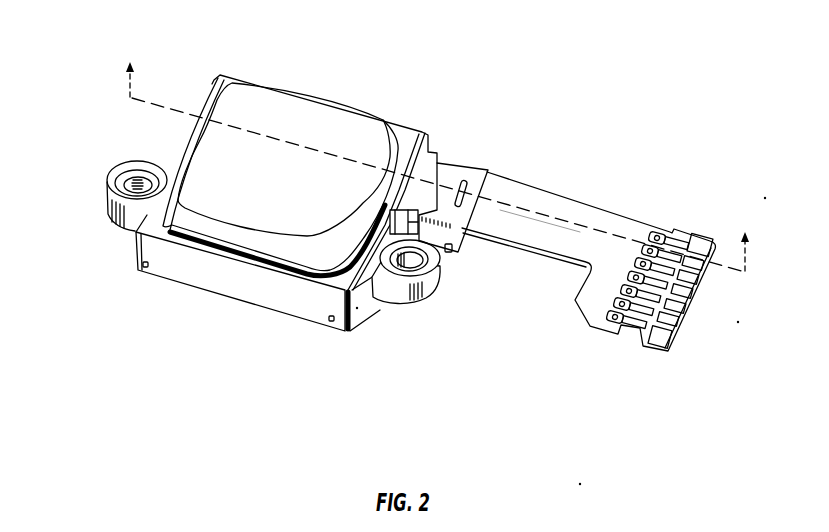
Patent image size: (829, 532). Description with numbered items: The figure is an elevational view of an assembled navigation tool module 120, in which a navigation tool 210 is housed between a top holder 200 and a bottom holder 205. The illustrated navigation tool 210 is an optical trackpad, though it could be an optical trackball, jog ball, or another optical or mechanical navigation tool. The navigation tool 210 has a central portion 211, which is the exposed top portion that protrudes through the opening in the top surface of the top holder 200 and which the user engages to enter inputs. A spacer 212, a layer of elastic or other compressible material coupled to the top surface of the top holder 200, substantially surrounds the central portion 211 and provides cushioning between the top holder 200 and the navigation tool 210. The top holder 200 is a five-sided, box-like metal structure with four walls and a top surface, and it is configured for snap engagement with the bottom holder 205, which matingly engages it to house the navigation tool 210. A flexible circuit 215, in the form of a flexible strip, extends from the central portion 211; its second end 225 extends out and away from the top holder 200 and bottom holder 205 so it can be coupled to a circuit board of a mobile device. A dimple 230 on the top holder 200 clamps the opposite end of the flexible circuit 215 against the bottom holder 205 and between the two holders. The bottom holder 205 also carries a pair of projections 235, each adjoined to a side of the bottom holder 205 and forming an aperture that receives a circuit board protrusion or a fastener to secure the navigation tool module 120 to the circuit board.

The navigation tool module 120 is at (239, 40).
The top holder 200 is at (228, 283).
The bottom holder 205 is at (390, 291).
The navigation tool 210 is at (308, 107).
The central portion 211 is at (188, 215).
The spacer 212 is at (177, 229).
The flexible circuit 215 is at (549, 193).
The second end 225 is at (552, 235).
The dimple 230 is at (467, 177).
The projections 235 is at (118, 175).